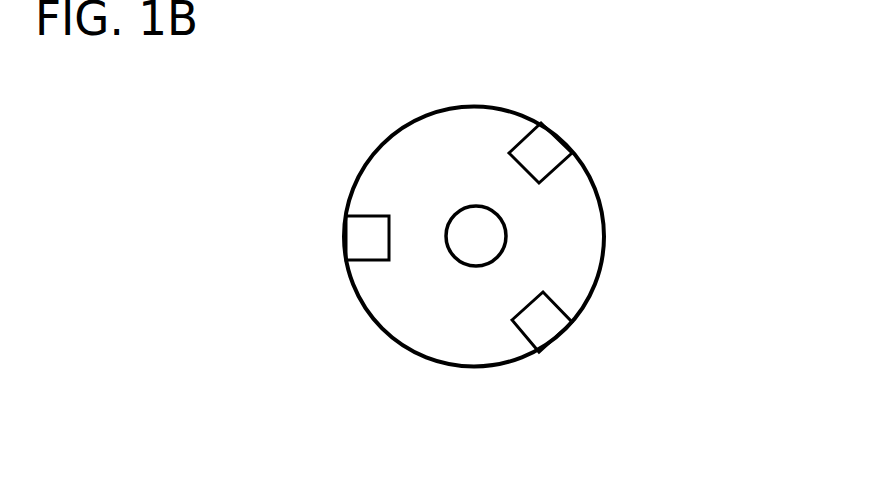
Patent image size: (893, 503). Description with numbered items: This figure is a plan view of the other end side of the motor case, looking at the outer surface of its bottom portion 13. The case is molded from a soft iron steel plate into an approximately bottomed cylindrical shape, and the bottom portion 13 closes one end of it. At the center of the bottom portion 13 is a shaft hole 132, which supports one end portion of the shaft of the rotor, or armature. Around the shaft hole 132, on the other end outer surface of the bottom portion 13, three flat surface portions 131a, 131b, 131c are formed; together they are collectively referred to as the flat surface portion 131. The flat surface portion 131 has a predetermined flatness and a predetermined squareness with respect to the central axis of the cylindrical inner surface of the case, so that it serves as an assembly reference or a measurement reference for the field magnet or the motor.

The bottom portion 13 is at (604, 267).
The flat surface portion 131 is at (208, 151).
The flat surface portion 131a is at (555, 148).
The flat surface portion 131b is at (360, 238).
The flat surface portion 131c is at (558, 325).
The shaft hole 132 is at (493, 232).